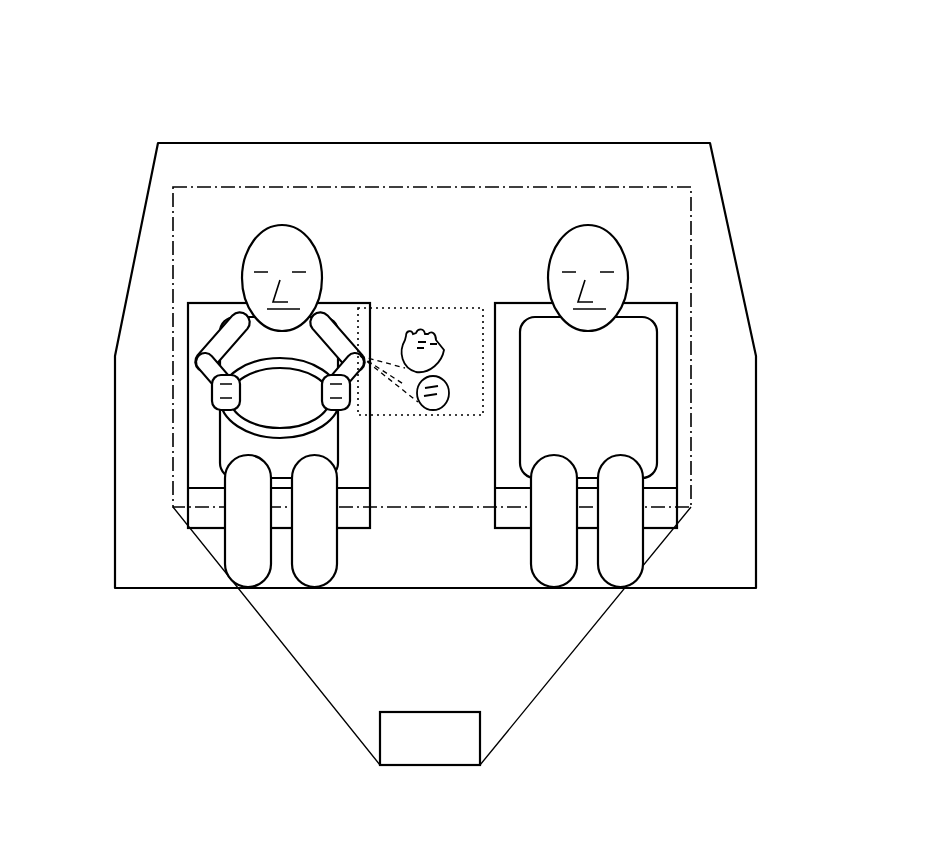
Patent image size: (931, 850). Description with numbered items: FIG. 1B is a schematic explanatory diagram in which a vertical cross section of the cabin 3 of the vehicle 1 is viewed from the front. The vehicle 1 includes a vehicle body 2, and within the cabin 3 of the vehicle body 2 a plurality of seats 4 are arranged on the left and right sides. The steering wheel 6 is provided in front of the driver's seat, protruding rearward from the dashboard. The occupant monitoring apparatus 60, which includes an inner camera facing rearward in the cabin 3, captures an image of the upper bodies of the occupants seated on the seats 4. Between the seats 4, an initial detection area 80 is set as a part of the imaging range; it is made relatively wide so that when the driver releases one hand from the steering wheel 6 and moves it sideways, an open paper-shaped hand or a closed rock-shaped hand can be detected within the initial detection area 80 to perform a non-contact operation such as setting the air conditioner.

The vehicle 1 is at (290, 126).
The vehicle body 2 is at (342, 150).
The cabin 3 is at (532, 165).
The seats 4 is at (188, 328).
The steering wheel 6 is at (225, 418).
The occupant monitoring apparatus 60 is at (470, 740).
The initial detection area 80 is at (415, 415).